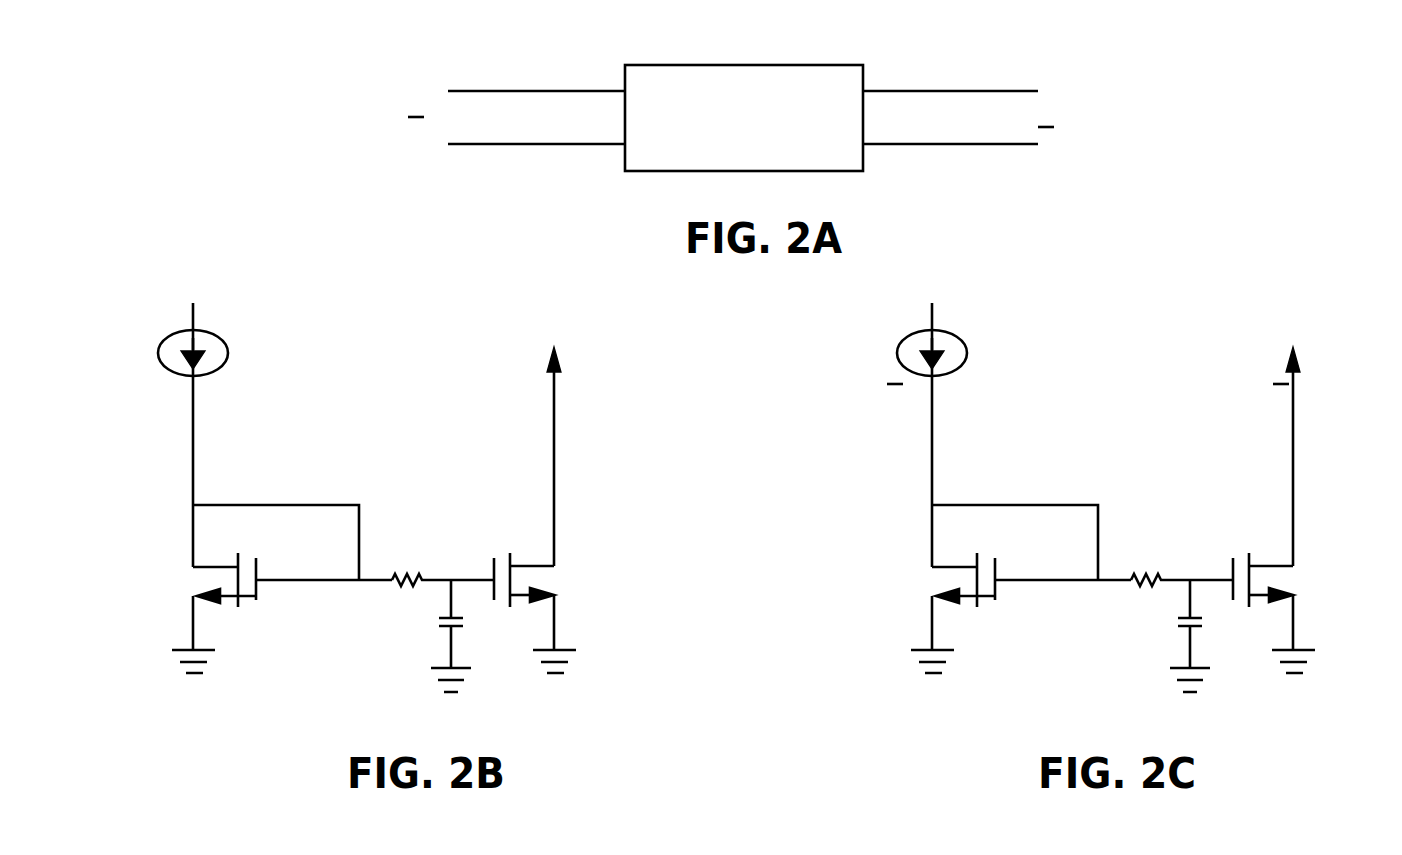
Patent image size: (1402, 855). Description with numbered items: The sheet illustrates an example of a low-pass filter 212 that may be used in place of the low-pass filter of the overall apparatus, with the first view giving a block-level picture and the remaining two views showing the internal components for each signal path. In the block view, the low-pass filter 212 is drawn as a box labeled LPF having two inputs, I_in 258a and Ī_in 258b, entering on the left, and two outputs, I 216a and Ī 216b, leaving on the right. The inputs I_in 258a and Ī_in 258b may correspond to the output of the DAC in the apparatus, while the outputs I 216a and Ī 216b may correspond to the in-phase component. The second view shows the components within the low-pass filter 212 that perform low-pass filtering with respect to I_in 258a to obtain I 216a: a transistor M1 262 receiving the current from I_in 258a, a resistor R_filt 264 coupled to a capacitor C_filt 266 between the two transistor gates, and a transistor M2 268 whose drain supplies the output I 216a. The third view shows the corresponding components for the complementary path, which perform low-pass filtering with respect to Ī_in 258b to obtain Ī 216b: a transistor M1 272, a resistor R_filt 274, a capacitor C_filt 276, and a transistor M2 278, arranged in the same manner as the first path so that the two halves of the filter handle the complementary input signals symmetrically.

In FIG. 2A, the low-pass filter 212 is at (745, 65).
In FIG. 2A, the input I_in 258a is at (502, 91).
In FIG. 2B, the input I_in 258a is at (196, 403).
In FIG. 2A, the input Ī_in 258b is at (502, 144).
In FIG. 2C, the input Ī_in 258b is at (947, 435).
In FIG. 2A, the output I 216a is at (912, 91).
In FIG. 2B, the output I 216a is at (557, 415).
In FIG. 2A, the output Ī 216b is at (912, 144).
In FIG. 2C, the output Ī 216b is at (1322, 456).
In FIG. 2B, the transistor M1 262 is at (282, 589).
In FIG. 2B, the resistor R_filt 264 is at (442, 567).
In FIG. 2B, the capacitor C_filt 266 is at (424, 636).
In FIG. 2B, the transistor M2 268 is at (546, 613).
In FIG. 2C, the transistor M1 272 is at (1021, 589).
In FIG. 2C, the resistor R_filt 274 is at (1181, 567).
In FIG. 2C, the capacitor C_filt 276 is at (1163, 636).
In FIG. 2C, the transistor M2 278 is at (1285, 613).